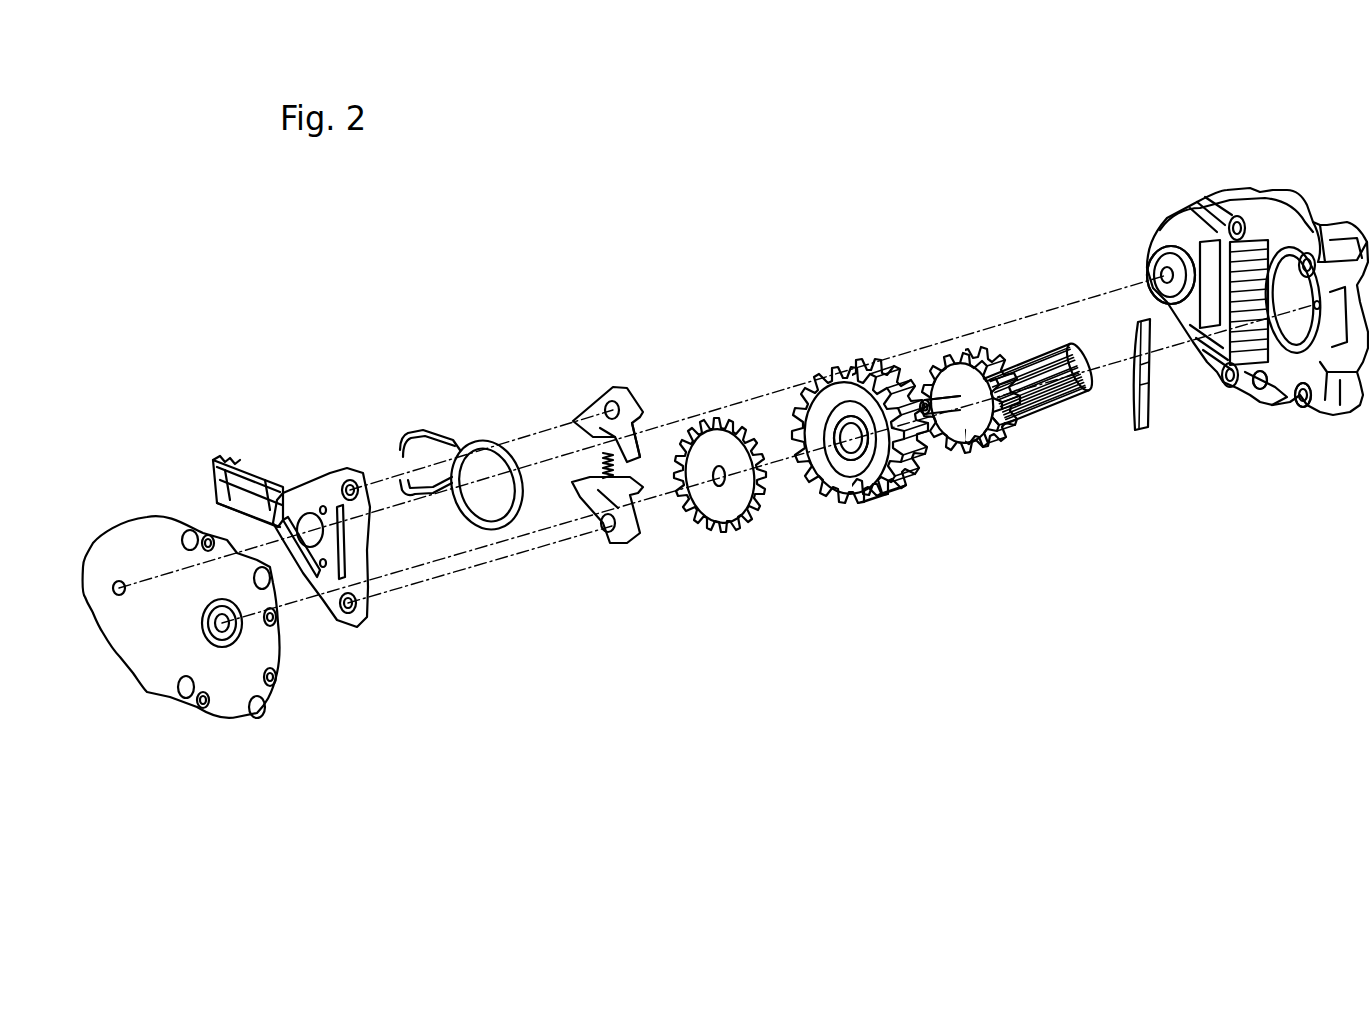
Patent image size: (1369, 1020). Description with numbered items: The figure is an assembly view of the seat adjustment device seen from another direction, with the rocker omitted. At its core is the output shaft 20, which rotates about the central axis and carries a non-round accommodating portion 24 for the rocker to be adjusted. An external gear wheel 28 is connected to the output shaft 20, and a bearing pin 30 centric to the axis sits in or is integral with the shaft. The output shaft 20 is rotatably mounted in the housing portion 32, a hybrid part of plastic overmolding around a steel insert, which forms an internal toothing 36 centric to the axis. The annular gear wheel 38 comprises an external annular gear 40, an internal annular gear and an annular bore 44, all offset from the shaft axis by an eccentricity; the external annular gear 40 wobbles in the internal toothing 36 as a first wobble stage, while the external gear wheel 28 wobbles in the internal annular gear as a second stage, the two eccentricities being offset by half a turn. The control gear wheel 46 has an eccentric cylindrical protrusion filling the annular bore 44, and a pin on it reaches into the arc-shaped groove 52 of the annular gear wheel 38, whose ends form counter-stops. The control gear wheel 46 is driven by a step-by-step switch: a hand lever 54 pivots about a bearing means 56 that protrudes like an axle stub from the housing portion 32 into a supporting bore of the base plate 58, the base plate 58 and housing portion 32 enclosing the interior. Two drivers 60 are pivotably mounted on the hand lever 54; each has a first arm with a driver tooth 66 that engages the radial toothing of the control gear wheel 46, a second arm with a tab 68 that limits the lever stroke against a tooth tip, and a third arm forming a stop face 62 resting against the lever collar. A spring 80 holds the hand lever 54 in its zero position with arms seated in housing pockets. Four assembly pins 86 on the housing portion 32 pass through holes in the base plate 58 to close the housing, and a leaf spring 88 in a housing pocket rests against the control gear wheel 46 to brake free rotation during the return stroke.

The output shaft 20 is at (983, 402).
The non-round accommodating portion 24 is at (1058, 400).
The external gear wheel 28 is at (980, 447).
The bearing pin 30 is at (922, 393).
The housing portion 32 is at (1297, 223).
The internal toothing 36 is at (1282, 382).
The annular gear wheel 38 is at (852, 345).
The external annular gear 40 is at (900, 483).
The annular bore 44 is at (843, 437).
The control gear wheel 46 is at (733, 503).
The arc-shaped groove 52 is at (858, 468).
The hand lever 54 is at (222, 457).
The bearing means 56 is at (1167, 272).
The base plate 58 is at (152, 670).
The driver 60 is at (615, 398).
The stop face 62 is at (572, 418).
The driver tooth 66 is at (660, 455).
The tab 68 is at (640, 540).
The spring 80 is at (450, 500).
The assembly pin 86 is at (1345, 402).
The leaf spring 88 is at (1142, 430).